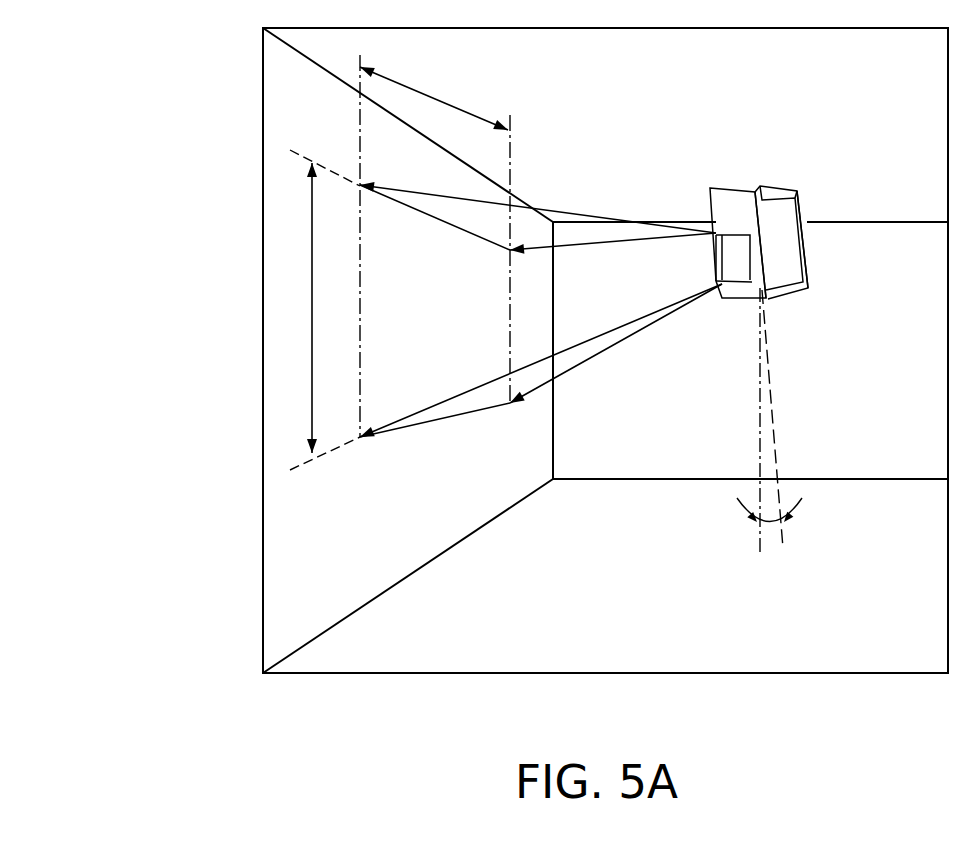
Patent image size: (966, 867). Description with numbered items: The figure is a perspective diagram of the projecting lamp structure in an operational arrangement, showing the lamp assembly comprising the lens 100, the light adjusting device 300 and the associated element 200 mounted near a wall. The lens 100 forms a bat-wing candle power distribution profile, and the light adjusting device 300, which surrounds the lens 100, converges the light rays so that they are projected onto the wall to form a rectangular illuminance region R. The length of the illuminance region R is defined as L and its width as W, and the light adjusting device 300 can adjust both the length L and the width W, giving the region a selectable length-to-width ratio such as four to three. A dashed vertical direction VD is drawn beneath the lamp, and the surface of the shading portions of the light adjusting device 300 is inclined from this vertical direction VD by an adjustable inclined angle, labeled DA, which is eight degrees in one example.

The lens 100 is at (733, 177).
The imaging device 200 is at (801, 185).
The light adjusting device 300 is at (822, 199).
The illumination region R is at (410, 347).
The length of the illuminance region L is at (434, 97).
The width of the illuminance region W is at (297, 308).
The vertical direction VD is at (758, 428).
The deviation angle DA is at (791, 419).